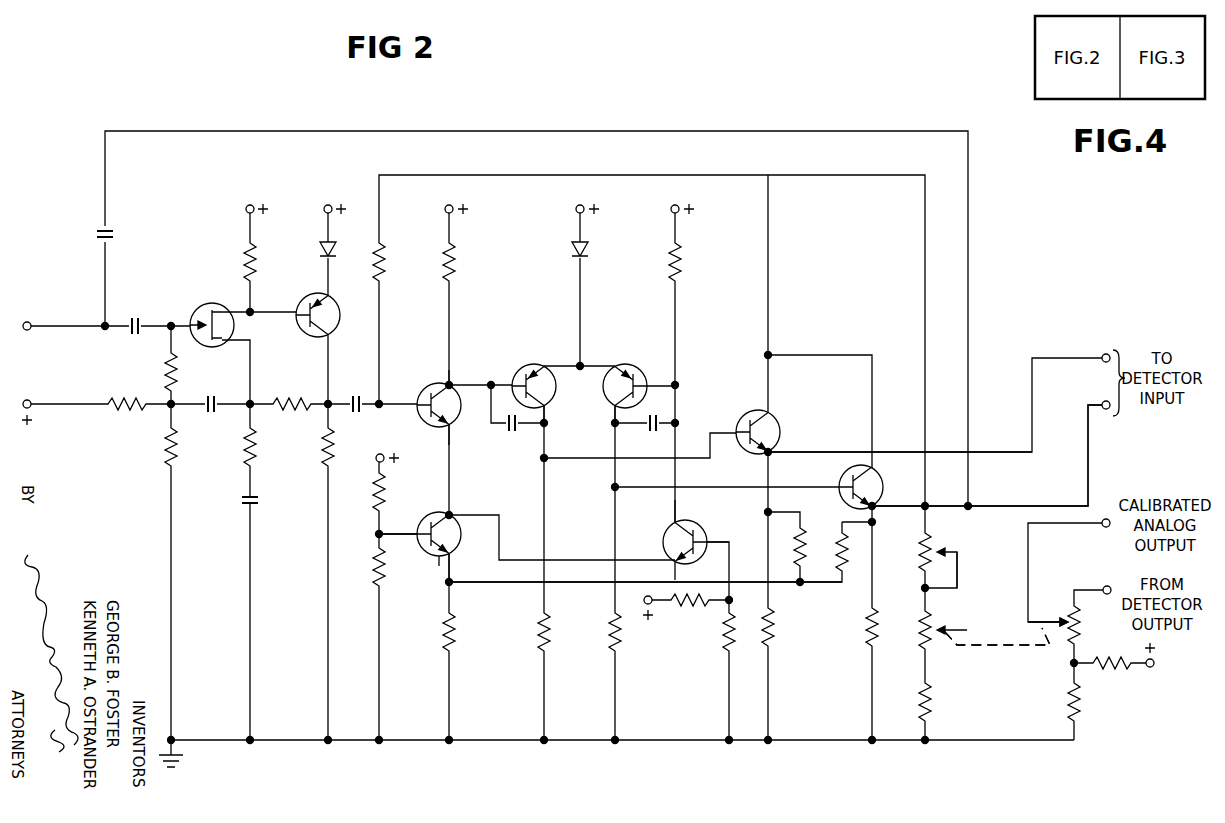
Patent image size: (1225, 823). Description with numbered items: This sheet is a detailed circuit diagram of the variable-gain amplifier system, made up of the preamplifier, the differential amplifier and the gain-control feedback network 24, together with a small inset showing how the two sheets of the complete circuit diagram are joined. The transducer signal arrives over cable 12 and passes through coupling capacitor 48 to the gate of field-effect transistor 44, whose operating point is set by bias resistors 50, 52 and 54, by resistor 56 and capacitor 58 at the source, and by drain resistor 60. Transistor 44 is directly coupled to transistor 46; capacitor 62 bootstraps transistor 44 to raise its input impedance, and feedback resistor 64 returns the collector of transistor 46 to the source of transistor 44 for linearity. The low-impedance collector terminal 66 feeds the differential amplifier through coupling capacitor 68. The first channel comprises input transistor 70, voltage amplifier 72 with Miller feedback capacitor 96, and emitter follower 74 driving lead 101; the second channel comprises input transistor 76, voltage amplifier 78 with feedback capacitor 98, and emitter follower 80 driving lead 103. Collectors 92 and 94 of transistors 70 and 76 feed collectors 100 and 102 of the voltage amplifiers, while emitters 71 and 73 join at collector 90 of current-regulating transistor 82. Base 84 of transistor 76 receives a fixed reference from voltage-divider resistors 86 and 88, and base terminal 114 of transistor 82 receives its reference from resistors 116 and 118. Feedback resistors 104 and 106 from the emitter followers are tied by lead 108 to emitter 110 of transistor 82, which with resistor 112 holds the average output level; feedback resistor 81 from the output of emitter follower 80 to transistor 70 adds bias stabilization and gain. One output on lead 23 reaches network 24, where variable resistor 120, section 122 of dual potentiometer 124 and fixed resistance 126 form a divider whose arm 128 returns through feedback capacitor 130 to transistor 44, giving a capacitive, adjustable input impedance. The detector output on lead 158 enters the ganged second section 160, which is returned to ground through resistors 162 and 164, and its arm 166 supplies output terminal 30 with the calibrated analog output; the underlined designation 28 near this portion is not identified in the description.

The electrical cable 12 is at (70, 326).
The feedback capacitor 130 is at (98, 236).
The coupling capacitor 48 is at (142, 320).
The field-effect transistor 44 is at (214, 305).
The resistor 52 is at (162, 378).
The resistor 60 is at (256, 276).
The transistor 46 is at (338, 330).
The resistor 50 is at (132, 416).
The resistor 54 is at (166, 470).
The capacitor 62 is at (218, 416).
The resistor 56 is at (258, 452).
The capacitor 58 is at (260, 500).
The feedback resistor 64 is at (296, 396).
The collector terminal 66 is at (330, 420).
The coupling capacitor 68 is at (358, 400).
The feedback resistor 81 is at (385, 264).
The resistor 116 is at (374, 486).
The resistor 118 is at (374, 574).
The input transistor 70 is at (430, 428).
The emitter 71 is at (450, 433).
The collector 92 is at (452, 386).
The voltage amplifier 72 is at (530, 362).
The collector 100 is at (544, 408).
The feedback capacitor 96 is at (516, 434).
The voltage amplifier 78 is at (638, 364).
The collector 102 is at (614, 416).
The feedback capacitor 98 is at (650, 430).
The emitter follower output stage 74 is at (780, 424).
The lead 101 is at (908, 448).
The emitter follower output stage 80 is at (840, 480).
The lead 23 is at (906, 502).
The lead 103 is at (1010, 504).
The base terminal 114 is at (400, 528).
The collector 90 is at (452, 515).
The transistor 82 is at (422, 562).
The emitter 110 is at (454, 569).
The voltage-divider resistor 112 is at (454, 628).
The input transistor 76 is at (684, 526).
The collector 94 is at (672, 528).
The emitter 73 is at (664, 558).
The base 84 is at (726, 540).
The voltage-divider resistor 86 is at (692, 612).
The voltage-divider resistor 88 is at (724, 656).
The feedback resistor 104 is at (794, 548).
The feedback resistor 106 is at (836, 536).
The lead 108 is at (786, 586).
The variable resistor 120 is at (920, 550).
The potentiometer section 122 is at (922, 614).
The slider arm 128 is at (960, 616).
The dual potentiometer 124 is at (1012, 610).
The fixed resistance 126 is at (932, 698).
The variable-impedance network 24 is at (912, 666).
The output terminal 30 is at (1102, 526).
The arm 166 is at (1036, 616).
The lead 158 is at (1076, 594).
The potentiometer section 160 is at (1080, 622).
The resistor 162 is at (1106, 668).
The resistor 164 is at (1070, 708).
The output circuit 28 is at (1080, 776).